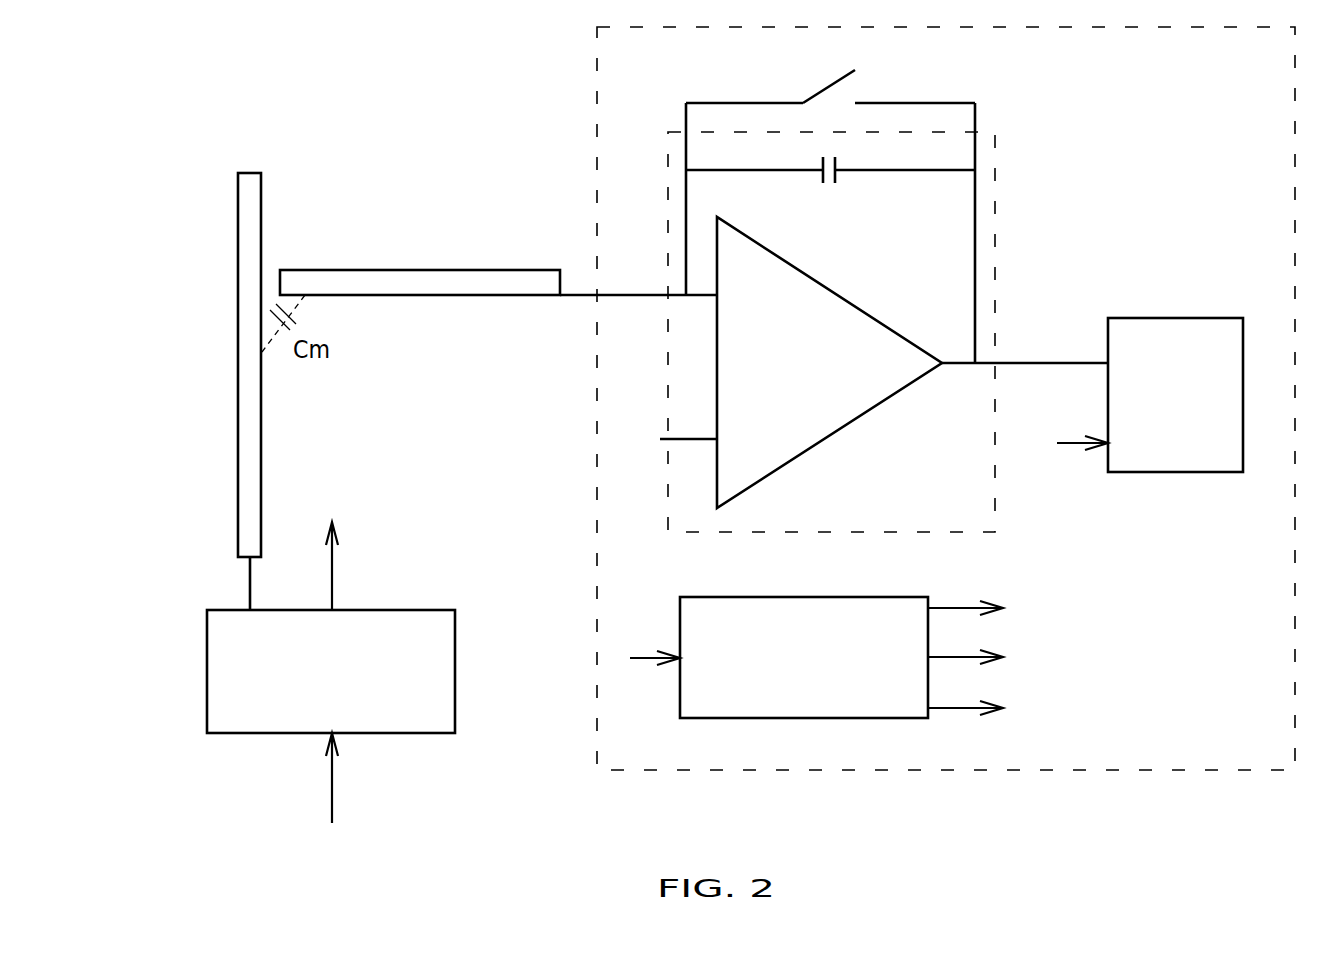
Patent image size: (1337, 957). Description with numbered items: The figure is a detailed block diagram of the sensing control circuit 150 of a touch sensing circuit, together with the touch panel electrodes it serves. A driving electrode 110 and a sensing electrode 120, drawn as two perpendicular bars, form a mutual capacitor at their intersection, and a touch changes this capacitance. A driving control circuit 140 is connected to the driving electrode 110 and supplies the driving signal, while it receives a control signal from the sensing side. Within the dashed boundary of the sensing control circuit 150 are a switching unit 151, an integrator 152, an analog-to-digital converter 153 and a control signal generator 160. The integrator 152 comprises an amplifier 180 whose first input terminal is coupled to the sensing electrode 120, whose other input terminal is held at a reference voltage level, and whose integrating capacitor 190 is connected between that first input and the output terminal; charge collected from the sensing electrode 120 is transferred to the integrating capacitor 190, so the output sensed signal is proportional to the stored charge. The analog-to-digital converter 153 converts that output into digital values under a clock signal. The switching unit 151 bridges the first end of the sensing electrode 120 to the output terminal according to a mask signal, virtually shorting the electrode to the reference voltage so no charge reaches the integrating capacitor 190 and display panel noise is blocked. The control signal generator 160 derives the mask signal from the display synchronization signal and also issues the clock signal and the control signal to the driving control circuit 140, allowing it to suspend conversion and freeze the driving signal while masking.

The driving electrode 110 is at (251, 173).
The sensing electrode 120 is at (480, 270).
The driving control circuit 140 is at (458, 670).
The sensing control circuit 150 is at (1085, 772).
The switching unit 151 is at (860, 90).
The integrator 152 is at (994, 207).
The analog-to-digital converter 153 is at (1217, 318).
The control signal generator 160 is at (825, 597).
The amplifier 180 is at (851, 300).
The integrating capacitor 190 is at (834, 185).